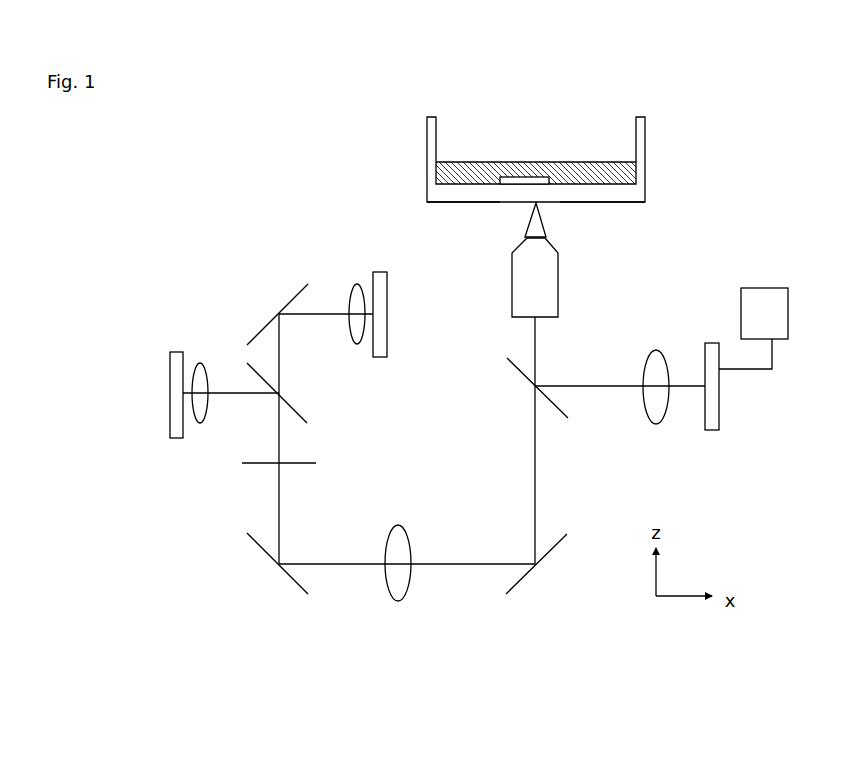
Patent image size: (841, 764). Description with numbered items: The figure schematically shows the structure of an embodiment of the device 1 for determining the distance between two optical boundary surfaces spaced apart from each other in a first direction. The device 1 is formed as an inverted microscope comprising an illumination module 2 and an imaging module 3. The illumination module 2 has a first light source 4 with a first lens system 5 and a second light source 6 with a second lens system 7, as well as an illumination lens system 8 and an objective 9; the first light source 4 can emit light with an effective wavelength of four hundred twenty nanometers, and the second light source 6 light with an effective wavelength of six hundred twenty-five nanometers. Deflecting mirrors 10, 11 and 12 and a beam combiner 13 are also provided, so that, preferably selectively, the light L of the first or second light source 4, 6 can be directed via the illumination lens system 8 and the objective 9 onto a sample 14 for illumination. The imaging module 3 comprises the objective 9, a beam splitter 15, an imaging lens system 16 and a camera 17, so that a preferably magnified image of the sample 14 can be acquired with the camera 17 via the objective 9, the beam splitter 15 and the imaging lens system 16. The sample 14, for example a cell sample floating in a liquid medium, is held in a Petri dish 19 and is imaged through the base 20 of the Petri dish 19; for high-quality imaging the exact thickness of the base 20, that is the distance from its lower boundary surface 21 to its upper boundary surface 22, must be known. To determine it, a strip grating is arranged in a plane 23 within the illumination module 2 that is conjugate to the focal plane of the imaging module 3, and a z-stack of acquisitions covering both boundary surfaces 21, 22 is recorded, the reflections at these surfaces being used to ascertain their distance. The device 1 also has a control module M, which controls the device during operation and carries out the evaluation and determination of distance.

The device 1 is at (401, 570).
The illumination module 2 is at (274, 271).
The imaging module 3 is at (640, 429).
The first light source 4 is at (380, 357).
The first lens system 5 is at (355, 284).
The second light source 6 is at (173, 438).
The second lens system 7 is at (200, 362).
The illumination lens system 8 is at (407, 527).
The objective 9 is at (558, 282).
The deflecting mirror 10 is at (257, 330).
The deflecting mirror 11 is at (288, 573).
The deflecting mirror 12 is at (527, 575).
The beam combiner 13 is at (305, 412).
The sample 14 is at (540, 177).
The beam splitter 15 is at (508, 358).
The imaging lens system 16 is at (657, 424).
The camera 17 is at (718, 430).
The Petri dish 19 is at (645, 145).
The base 20 is at (635, 195).
The lower boundary surface 21 is at (437, 203).
The upper boundary surface 22 is at (485, 185).
The plane 23 is at (265, 466).
The light L is at (345, 564).
The control module M is at (741, 307).